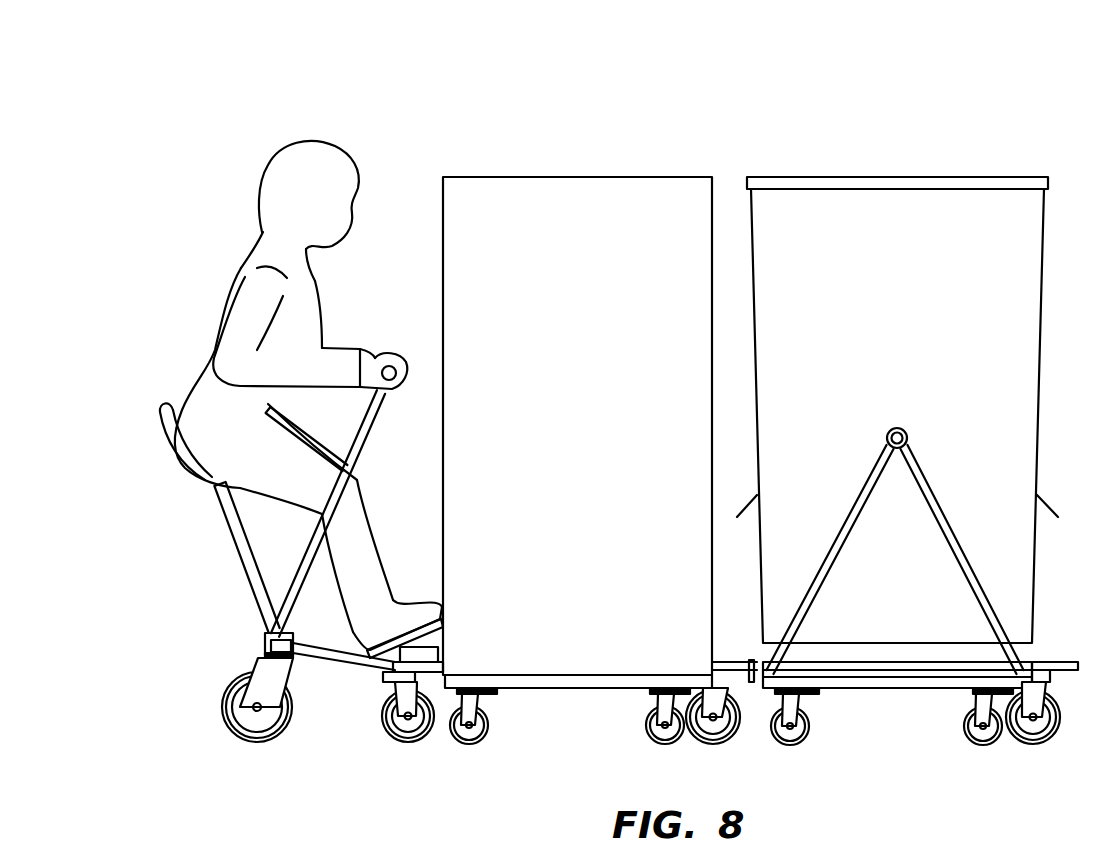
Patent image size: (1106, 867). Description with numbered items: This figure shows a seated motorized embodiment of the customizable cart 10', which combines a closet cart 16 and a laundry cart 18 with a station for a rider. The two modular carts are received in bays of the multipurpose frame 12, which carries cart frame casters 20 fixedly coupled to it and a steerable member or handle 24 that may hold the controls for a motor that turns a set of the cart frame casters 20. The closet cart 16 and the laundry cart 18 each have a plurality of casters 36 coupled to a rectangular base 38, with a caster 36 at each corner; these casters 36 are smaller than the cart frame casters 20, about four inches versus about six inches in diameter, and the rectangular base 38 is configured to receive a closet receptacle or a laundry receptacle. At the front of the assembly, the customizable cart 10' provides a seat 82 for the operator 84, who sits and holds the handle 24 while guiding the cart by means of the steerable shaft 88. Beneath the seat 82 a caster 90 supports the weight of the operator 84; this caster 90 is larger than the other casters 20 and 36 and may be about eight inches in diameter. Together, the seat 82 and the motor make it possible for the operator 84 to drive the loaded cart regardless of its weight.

The customizable cart 10' is at (203, 81).
The multipurpose frame 12 is at (752, 682).
The closet cart 16 is at (538, 232).
The laundry cart 18 is at (874, 232).
The cart frame casters 20 is at (408, 719).
The steerable member or handle 24 is at (387, 366).
The casters 36 is at (665, 728).
The rectangular base 38 is at (848, 665).
The seat 82 is at (162, 433).
The operator 84 is at (237, 356).
The steerable shaft 88 is at (308, 560).
The caster 90 is at (258, 710).